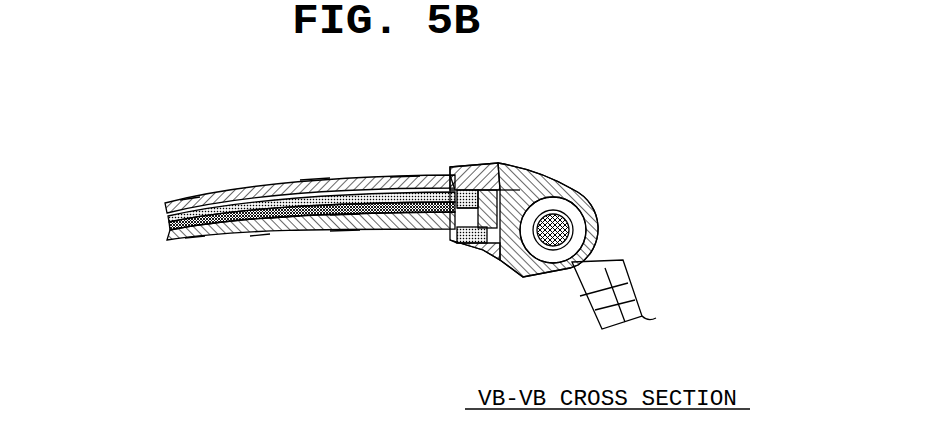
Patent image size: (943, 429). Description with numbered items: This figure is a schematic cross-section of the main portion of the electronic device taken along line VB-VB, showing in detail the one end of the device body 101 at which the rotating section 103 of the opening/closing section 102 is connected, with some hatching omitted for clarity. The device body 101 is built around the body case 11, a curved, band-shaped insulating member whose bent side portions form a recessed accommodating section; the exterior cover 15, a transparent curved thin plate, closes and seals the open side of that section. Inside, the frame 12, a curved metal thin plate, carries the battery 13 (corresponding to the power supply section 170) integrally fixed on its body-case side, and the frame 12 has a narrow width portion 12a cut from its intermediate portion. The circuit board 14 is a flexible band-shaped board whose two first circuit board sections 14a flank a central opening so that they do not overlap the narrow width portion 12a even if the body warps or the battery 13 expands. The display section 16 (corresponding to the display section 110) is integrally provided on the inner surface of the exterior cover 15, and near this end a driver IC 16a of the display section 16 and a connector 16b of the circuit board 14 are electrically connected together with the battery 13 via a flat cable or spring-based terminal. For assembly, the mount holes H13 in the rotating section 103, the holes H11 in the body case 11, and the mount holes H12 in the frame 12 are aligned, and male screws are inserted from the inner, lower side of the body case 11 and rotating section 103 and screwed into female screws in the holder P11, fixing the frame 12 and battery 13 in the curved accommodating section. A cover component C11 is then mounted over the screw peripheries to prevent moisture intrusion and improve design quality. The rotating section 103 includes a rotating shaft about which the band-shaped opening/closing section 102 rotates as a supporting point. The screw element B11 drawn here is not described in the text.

The device body 101 is at (268, 150).
The display section 16 is at (192, 197).
The display section 110 is at (157, 170).
The driver IC 16a is at (315, 180).
The connector 16b is at (415, 178).
The exterior cover 15 is at (243, 188).
The battery 13 is at (257, 236).
The power supply section 170 is at (259, 306).
The circuit board 14 is at (178, 243).
The first circuit board sections 14a is at (194, 281).
The body case 11 is at (286, 235).
The frame 12 is at (340, 231).
The narrow width portion 12a is at (340, 277).
The rotating section 103 is at (597, 187).
The cover component C11 is at (475, 163).
The mount holes H12 is at (447, 178).
The holder P11 is at (513, 173).
The holes H11 is at (450, 228).
The bolt / connecting member B11 is at (473, 238).
The mount holes H13 is at (472, 240).
The opening/closing section 102 is at (650, 275).